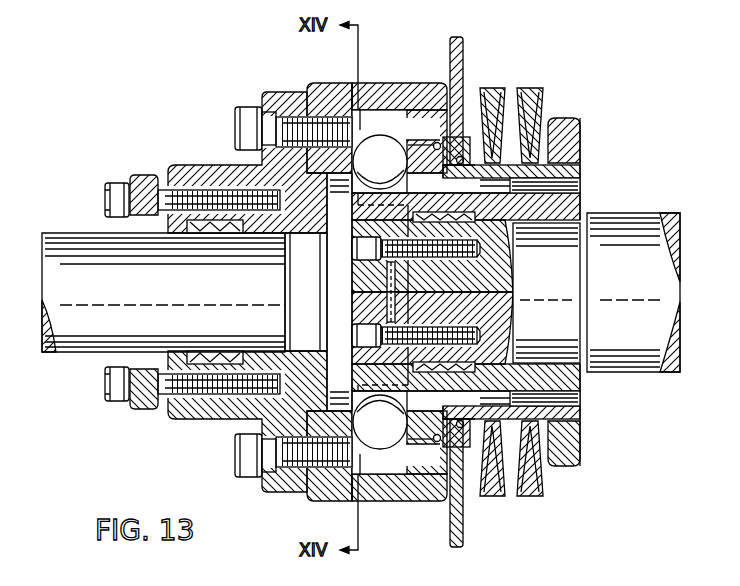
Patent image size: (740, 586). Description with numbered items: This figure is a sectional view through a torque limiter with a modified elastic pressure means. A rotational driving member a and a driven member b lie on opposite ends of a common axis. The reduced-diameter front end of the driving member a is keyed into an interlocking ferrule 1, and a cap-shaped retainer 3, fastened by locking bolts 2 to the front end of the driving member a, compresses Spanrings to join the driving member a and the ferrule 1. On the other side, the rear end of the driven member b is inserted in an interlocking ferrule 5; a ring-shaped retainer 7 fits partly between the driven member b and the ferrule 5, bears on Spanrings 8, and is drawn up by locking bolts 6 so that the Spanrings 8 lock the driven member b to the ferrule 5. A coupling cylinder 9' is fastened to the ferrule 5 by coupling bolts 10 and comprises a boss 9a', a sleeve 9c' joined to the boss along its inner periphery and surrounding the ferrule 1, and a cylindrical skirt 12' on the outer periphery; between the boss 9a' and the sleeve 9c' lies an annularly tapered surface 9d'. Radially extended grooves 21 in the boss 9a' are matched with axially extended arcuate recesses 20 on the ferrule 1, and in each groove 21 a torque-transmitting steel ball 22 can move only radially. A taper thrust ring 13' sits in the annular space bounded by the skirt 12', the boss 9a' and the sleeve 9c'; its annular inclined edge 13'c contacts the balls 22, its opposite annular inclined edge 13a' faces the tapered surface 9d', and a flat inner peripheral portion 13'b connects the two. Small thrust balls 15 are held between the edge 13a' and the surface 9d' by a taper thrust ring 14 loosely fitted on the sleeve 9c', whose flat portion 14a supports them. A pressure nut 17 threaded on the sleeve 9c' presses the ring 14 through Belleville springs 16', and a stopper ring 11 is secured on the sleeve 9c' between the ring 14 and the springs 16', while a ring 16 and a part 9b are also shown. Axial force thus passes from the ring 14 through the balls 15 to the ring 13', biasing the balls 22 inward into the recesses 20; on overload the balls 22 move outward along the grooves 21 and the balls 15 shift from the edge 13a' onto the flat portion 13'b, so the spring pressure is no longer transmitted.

The rotational driving member a is at (640, 226).
The driven member b is at (70, 242).
The interlocking ferrule 1 is at (590, 216).
The locking bolts 2 is at (365, 246).
The retainer 3 is at (365, 290).
The interlocking ferrule 5 is at (190, 172).
The locking bolts 6 is at (120, 190).
The ring-shaped retainer 7 is at (150, 183).
The Spanrings 8 is at (208, 228).
The coupling cylinder 9' is at (324, 278).
The boss 9a' is at (342, 292).
The housing ring 9b is at (372, 128).
The sleeve 9c' is at (466, 292).
The annularly tapered surface 9d' is at (458, 291).
The coupling bolts 10 is at (246, 116).
The stopper ring 11 is at (482, 183).
The cylindrical skirt 12' is at (399, 268).
The taper thrust ring 13' is at (402, 255).
The annular inclined edge 13a' is at (423, 292).
The flat inner peripheral portion 13'b is at (379, 278).
The annular inclined edge 13'c is at (380, 292).
The taper thrust ring 14 is at (466, 140).
The flat portion 14a is at (452, 170).
The small thrust balls 15 is at (455, 93).
The ring nut 16 is at (536, 292).
The Belleville springs 16' is at (514, 266).
The pressure nut 17 is at (565, 130).
The arcuate recesses 20 is at (398, 230).
The radially extended grooves 21 is at (358, 120).
The torque-transmitting steel ball 22 is at (412, 208).